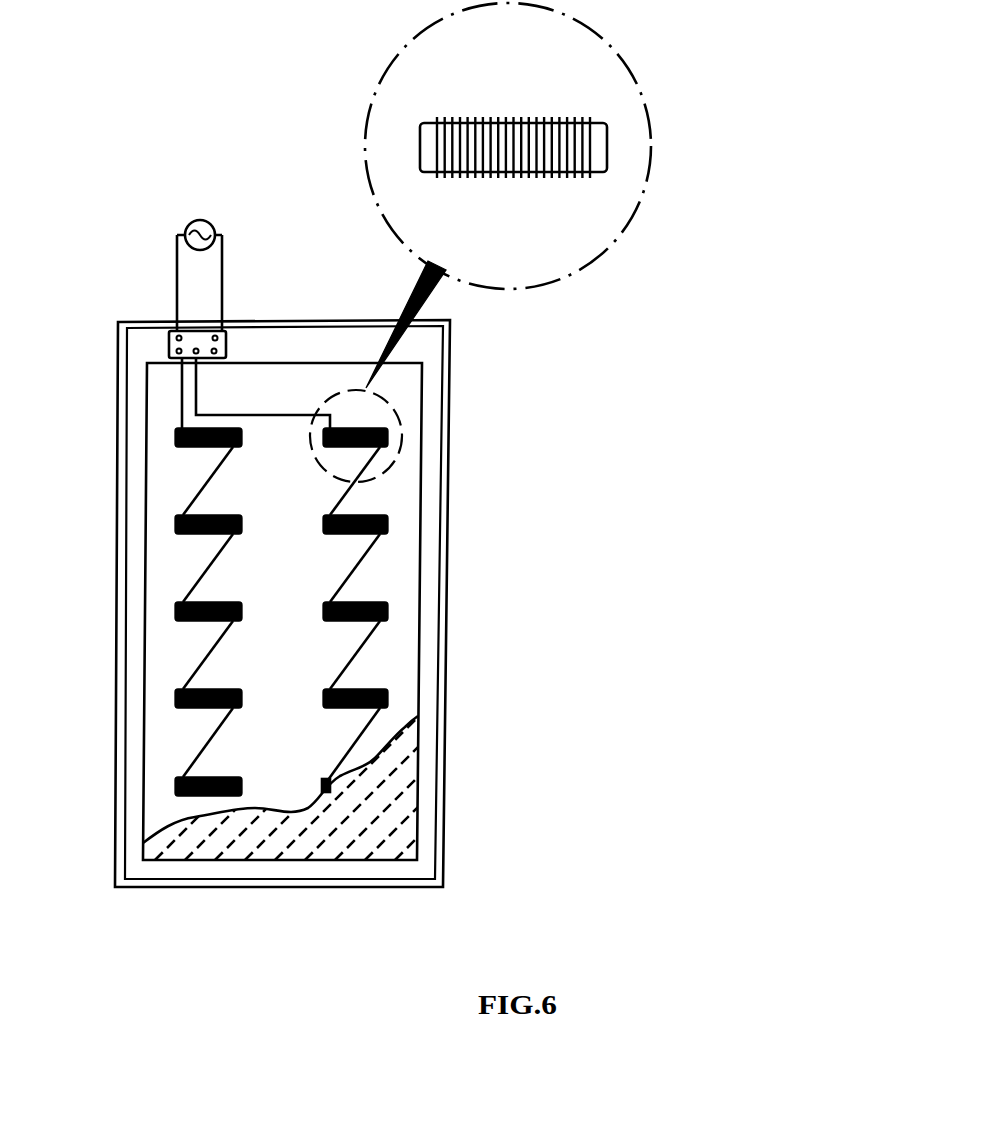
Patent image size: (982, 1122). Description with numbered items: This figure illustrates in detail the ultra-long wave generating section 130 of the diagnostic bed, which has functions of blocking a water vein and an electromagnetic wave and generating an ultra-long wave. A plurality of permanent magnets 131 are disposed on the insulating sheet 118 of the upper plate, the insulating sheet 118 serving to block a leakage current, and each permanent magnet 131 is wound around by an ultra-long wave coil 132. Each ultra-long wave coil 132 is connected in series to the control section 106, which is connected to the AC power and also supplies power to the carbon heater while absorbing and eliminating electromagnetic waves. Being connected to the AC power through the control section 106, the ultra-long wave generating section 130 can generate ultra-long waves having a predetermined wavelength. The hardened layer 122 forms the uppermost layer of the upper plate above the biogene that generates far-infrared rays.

The control section 106 is at (170, 331).
The insulating sheet 118 is at (398, 580).
The hardened layer 122 is at (380, 803).
The ultra-long wave generating section 130 is at (504, 399).
The permanent magnet 131 is at (386, 442).
The ultra-long wave coil 132 is at (385, 420).